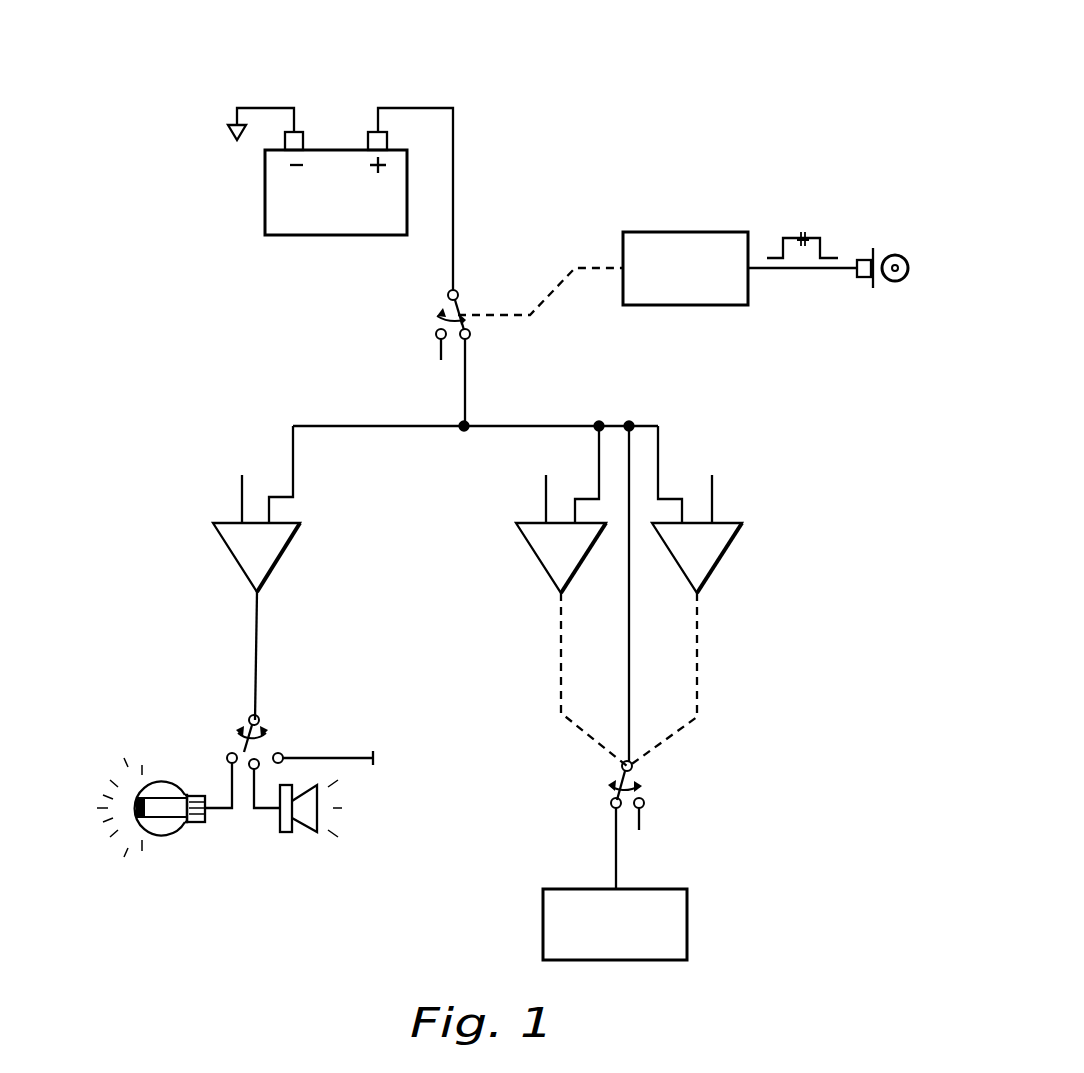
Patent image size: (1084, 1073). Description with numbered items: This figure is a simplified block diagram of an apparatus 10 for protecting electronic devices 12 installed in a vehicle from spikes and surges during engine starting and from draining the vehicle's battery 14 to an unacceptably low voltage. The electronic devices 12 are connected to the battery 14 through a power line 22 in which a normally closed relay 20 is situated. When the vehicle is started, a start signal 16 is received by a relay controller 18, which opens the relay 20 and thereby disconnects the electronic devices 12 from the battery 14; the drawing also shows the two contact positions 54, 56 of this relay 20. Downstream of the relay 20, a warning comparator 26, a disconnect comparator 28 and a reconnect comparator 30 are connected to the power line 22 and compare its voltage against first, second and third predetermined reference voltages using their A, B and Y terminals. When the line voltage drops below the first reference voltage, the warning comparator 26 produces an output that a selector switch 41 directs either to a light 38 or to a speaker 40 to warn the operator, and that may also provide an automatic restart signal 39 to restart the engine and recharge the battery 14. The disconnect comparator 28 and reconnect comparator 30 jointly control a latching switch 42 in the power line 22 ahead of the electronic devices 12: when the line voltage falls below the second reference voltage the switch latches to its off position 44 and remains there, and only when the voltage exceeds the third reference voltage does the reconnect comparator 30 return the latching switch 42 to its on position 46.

The apparatus for protecting electronic devices 10 is at (611, 69).
The electronic devices 12 is at (689, 923).
The battery 14 is at (265, 197).
The start signal 16 is at (808, 238).
The relay controller 18 is at (689, 232).
The relay 20 is at (457, 292).
The power line 22 is at (454, 162).
The warning comparator 26 is at (226, 547).
The disconnect comparator 28 is at (730, 548).
The reconnect comparator 30 is at (529, 546).
The light 38 is at (160, 824).
The automatic restart signal 39 is at (435, 706).
The speaker 40 is at (290, 833).
The selector switch 41 is at (268, 720).
The latching switch 42 is at (621, 762).
The off position 44 is at (645, 805).
The on position 46 is at (611, 805).
The switch contact 54 is at (436, 334).
The switch contact 56 is at (470, 337).